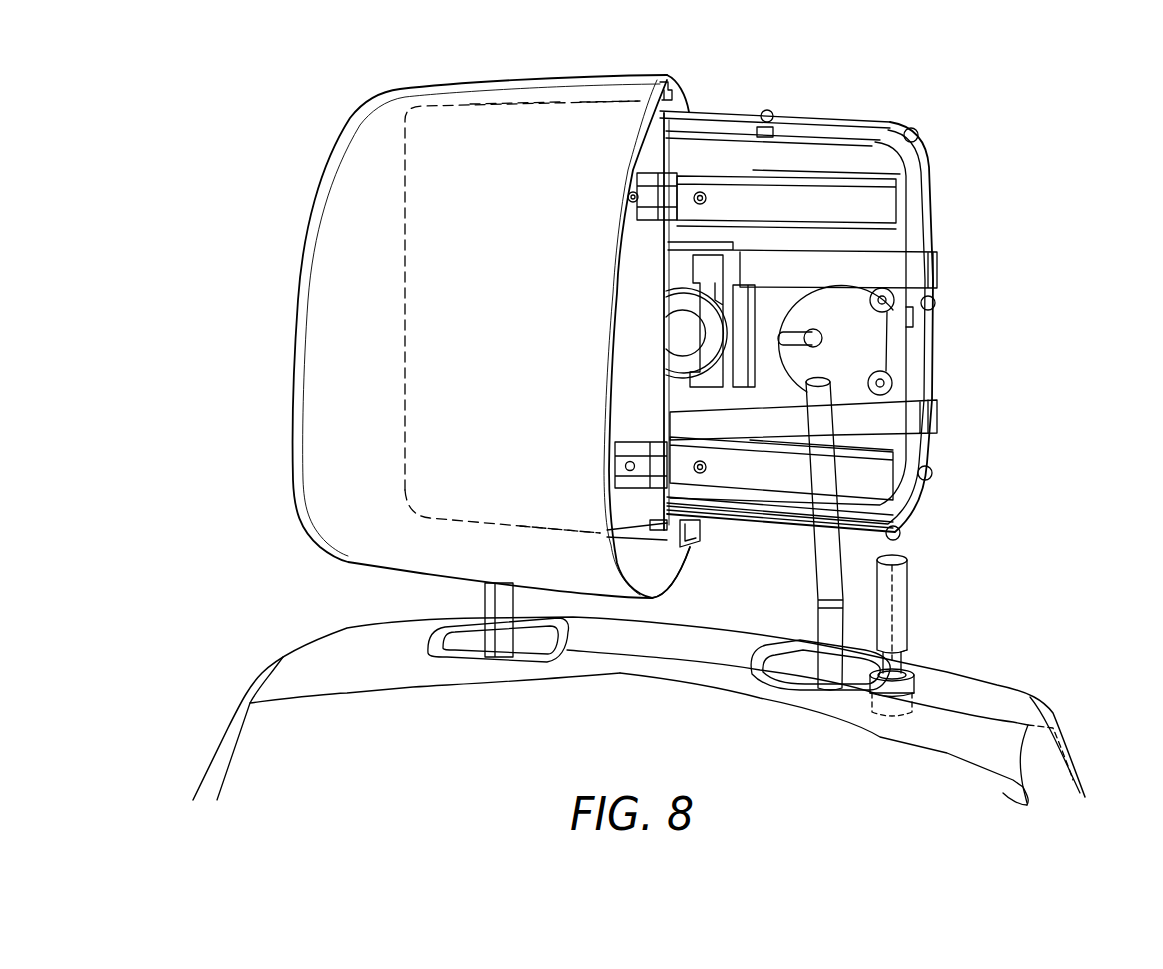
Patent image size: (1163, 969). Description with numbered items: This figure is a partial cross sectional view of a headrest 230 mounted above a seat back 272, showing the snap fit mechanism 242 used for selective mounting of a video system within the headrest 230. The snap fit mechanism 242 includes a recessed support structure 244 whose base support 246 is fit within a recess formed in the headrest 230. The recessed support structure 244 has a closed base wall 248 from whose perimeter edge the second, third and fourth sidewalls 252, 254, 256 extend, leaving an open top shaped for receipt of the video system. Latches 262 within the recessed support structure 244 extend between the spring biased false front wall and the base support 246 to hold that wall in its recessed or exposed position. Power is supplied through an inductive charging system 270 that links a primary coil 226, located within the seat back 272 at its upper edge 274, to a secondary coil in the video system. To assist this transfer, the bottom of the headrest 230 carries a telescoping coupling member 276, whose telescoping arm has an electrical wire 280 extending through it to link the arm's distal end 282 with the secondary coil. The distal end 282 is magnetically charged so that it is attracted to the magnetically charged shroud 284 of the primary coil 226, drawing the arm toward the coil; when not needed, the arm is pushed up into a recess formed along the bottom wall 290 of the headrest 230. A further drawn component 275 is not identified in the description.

The primary coil 226 is at (887, 713).
The headrest 230 is at (362, 167).
The snap fit mechanism 242 is at (695, 580).
The recessed support structure 244 is at (403, 285).
The base support 246 is at (624, 102).
The closed base wall 248 is at (453, 496).
The second sidewall 252 is at (530, 103).
The third sidewall 254 is at (420, 386).
The fourth sidewall 256 is at (555, 530).
The latches 262 is at (937, 415).
The inductive charging system 270 is at (765, 110).
The seat back 272 is at (1040, 800).
The upper edge of the seat back 274 is at (970, 690).
The guide rail 275 is at (840, 197).
The telescoping coupling member 276 is at (900, 608).
The electrical wire 280 is at (913, 670).
The distal end of the telescoping arm 282 is at (870, 669).
The magnetically charged shroud 284 is at (893, 628).
The bottom wall of the headrest 290 is at (660, 593).